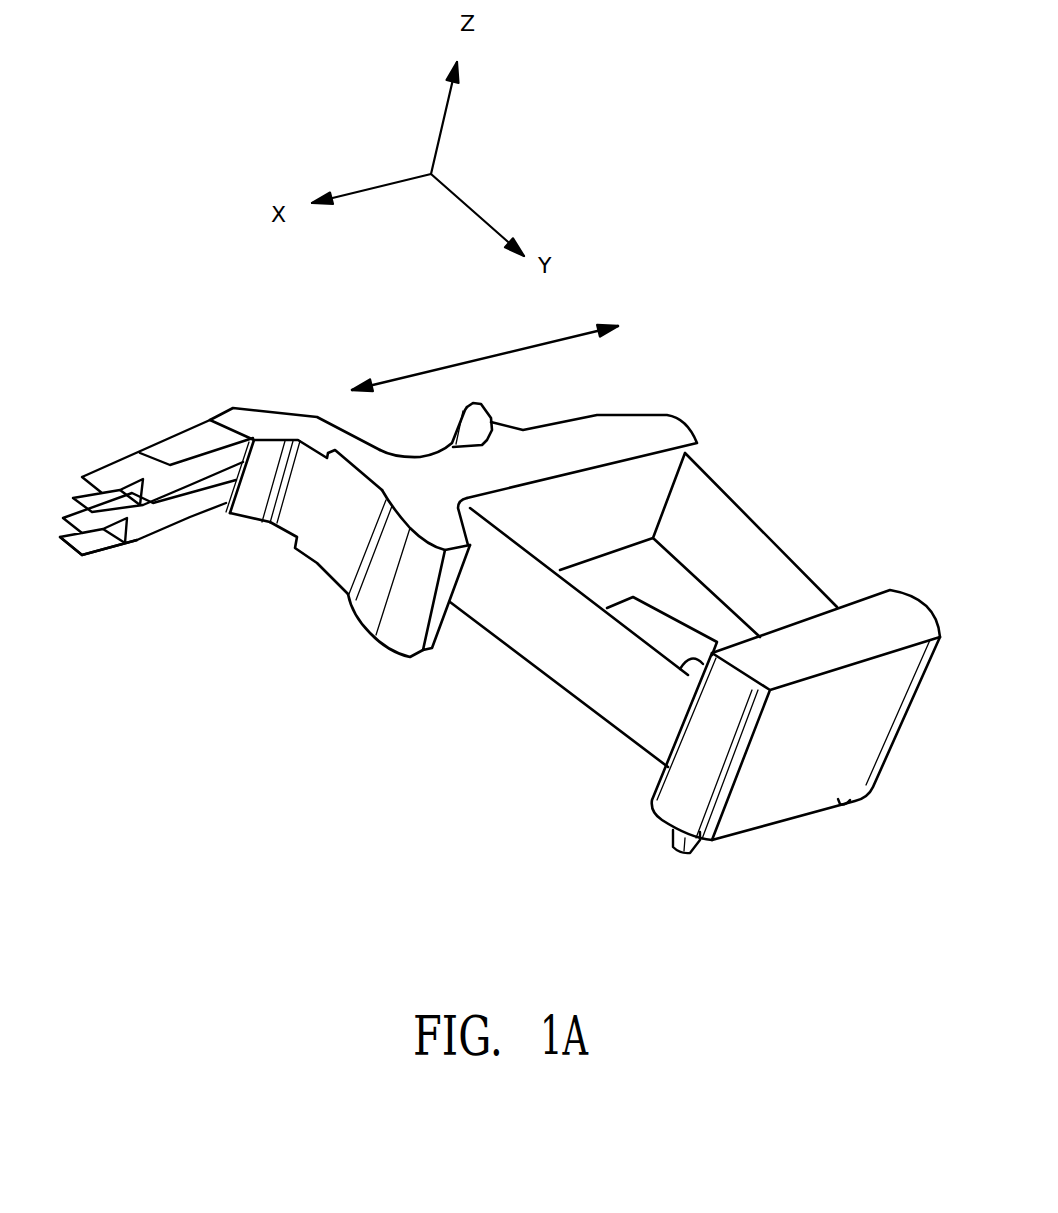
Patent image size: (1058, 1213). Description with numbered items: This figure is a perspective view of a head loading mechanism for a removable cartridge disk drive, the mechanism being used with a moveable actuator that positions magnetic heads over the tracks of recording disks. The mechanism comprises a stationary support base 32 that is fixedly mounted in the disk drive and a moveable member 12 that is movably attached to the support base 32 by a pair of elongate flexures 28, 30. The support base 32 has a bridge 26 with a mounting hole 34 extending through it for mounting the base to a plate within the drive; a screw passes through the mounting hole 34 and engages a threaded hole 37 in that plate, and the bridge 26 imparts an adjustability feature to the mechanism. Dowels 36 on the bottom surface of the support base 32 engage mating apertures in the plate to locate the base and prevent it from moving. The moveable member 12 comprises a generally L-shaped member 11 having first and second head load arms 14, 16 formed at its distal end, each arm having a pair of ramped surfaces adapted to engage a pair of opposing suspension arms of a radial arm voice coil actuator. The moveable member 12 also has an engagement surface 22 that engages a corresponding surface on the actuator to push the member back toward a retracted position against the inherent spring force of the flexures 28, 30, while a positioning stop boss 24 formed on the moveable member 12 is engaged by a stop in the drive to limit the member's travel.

The L-shaped member 11 is at (268, 410).
The moveable member 12 is at (432, 477).
The first head load arm 14 is at (118, 450).
The second head load arm 16 is at (138, 540).
The engagement surface 22 is at (392, 578).
The positioning stop boss 24 is at (480, 398).
The bridge 26 is at (673, 633).
The elongate flexure 28 is at (737, 503).
The elongate flexure 30 is at (579, 583).
The support base 32 is at (828, 735).
The mounting hole 34 is at (683, 672).
The dowel 36 is at (688, 853).
The threaded hole 37 is at (487, 358).